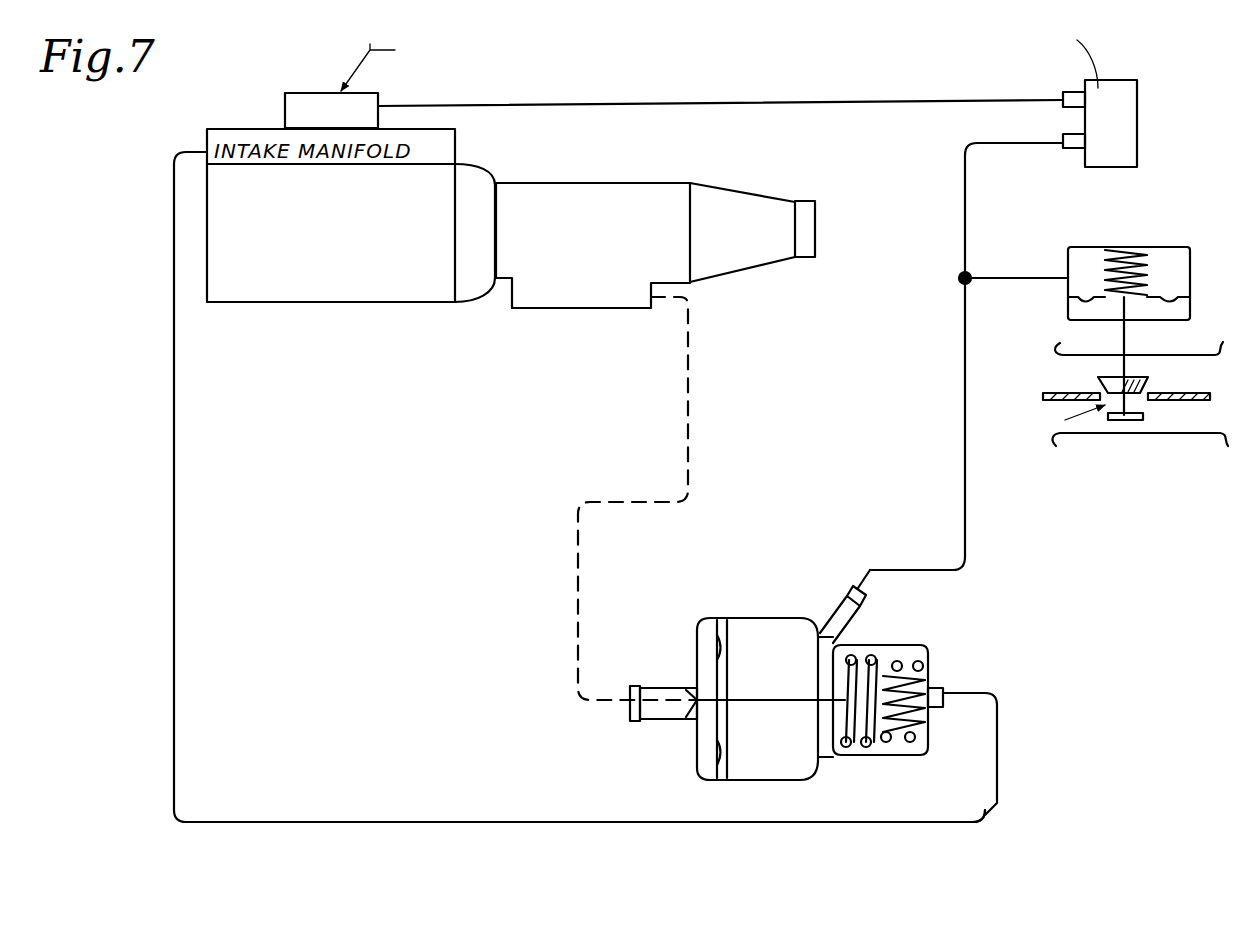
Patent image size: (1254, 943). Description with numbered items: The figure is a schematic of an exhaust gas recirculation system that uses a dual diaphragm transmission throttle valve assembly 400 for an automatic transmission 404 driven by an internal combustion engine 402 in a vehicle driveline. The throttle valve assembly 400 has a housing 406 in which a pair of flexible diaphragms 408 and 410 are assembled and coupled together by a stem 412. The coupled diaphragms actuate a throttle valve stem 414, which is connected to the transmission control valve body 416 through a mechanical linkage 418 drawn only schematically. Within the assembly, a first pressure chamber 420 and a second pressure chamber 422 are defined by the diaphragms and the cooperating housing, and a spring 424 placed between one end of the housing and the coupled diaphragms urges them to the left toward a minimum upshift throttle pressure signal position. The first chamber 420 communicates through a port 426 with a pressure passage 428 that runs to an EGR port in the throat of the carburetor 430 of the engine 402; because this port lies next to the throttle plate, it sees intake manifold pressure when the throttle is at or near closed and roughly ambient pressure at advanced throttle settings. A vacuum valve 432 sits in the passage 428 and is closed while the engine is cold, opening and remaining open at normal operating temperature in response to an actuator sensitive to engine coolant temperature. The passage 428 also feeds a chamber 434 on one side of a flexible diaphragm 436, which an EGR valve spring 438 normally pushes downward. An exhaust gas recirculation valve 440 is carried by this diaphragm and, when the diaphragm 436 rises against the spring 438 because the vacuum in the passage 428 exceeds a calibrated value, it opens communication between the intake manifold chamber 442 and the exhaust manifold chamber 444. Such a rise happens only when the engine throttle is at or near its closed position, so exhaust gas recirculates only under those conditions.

The throttle valve assembly 400 is at (790, 672).
The internal combustion engine 402 is at (380, 303).
The automatic transmission 404 is at (573, 297).
The housing 406 is at (730, 618).
The flexible diaphragm 408 is at (727, 738).
The flexible diaphragm 410 is at (838, 660).
The stem 412 is at (766, 696).
The throttle valve stem 414 is at (660, 692).
The transmission control valve body 416 is at (521, 306).
The mechanical linkage 418 is at (688, 430).
The first pressure chamber 420 is at (786, 630).
The second pressure chamber 422 is at (913, 650).
The spring 424 is at (927, 665).
The port 426 is at (835, 590).
The pressure passage 428 is at (965, 313).
The carburetor 430 is at (378, 107).
The vacuum valve 432 is at (1097, 121).
The chamber 434 is at (1105, 325).
The flexible diaphragm 436 is at (1082, 291).
The EGR valve spring 438 is at (1105, 249).
The exhaust gas recirculation valve 440 is at (1098, 381).
The intake manifold chamber 442 is at (1188, 360).
The exhaust manifold chamber 444 is at (1188, 432).